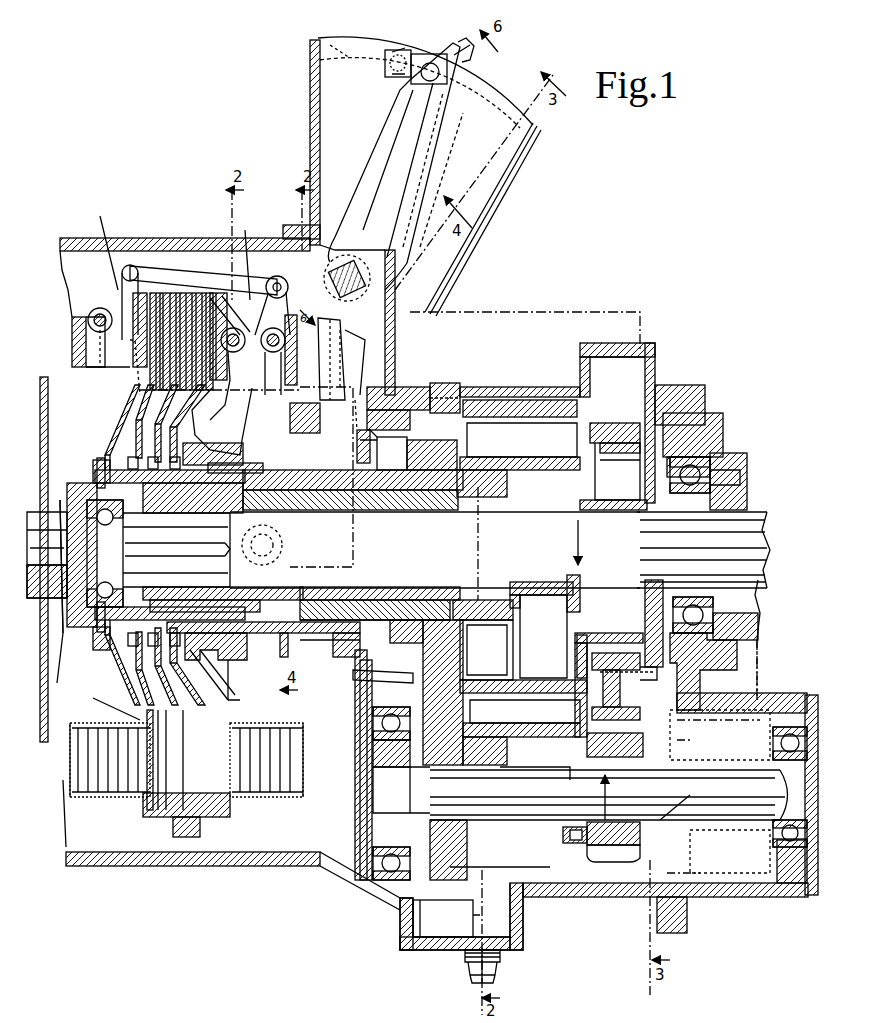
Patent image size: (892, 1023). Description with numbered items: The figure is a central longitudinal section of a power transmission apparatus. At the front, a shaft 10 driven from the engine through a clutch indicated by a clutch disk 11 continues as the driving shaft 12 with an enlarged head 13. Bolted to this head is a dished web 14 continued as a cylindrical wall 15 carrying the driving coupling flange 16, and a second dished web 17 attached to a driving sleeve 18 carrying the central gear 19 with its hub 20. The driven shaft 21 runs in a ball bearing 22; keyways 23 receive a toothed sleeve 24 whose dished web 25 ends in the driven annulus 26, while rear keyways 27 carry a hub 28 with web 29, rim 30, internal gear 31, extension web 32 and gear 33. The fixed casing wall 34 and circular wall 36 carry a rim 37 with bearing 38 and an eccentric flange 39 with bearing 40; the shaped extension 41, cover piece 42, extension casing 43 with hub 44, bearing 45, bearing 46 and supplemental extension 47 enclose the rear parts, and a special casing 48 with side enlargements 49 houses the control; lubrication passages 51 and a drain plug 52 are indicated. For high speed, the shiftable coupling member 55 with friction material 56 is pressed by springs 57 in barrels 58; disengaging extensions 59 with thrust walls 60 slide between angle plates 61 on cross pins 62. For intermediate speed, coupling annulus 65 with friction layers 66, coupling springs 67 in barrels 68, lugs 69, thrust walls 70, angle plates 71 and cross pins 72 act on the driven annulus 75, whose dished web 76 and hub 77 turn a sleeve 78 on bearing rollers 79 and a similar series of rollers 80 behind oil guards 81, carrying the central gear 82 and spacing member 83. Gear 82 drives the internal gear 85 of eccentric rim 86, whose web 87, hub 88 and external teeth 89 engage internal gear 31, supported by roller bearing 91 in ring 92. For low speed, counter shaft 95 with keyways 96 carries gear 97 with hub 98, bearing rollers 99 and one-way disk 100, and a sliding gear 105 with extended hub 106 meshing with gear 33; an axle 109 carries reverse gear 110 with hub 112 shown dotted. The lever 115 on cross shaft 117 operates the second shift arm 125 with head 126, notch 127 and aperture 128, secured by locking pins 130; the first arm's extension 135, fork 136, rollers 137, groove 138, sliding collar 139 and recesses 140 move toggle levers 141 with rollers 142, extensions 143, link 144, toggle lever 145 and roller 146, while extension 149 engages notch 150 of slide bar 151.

The shaft 10 is at (60, 500).
The clutch disk 11 is at (48, 420).
The driving shaft 12 is at (66, 625).
The enlarged head 13 is at (85, 630).
The dished web 14 is at (173, 460).
The cylindrical wall 15 is at (160, 815).
The flange 16 is at (185, 295).
The second dished web 17 is at (230, 700).
The driving sleeve 18 is at (350, 657).
The central gear 19 is at (415, 600).
The hub 20 is at (388, 510).
The driven shaft 21 is at (435, 550).
The ball bearing 22 is at (105, 553).
The keyways 23 is at (176, 550).
The toothed sleeve 24 is at (185, 520).
The dished web 25 is at (140, 410).
The annulus 26 is at (160, 290).
The keyways 27 is at (740, 556).
The hub 28 is at (712, 498).
The web 29 is at (645, 597).
The rim 30 is at (628, 453).
The internal gear 31 is at (603, 450).
The extension web 32 is at (622, 694).
The gear 33 is at (600, 360).
The casing wall 34 is at (200, 867).
The circular wall 36 is at (357, 448).
The rim 37 is at (360, 430).
The bearing 38 is at (417, 453).
The flange 39 is at (360, 690).
The bearing 40 is at (373, 727).
The shaped extension 41 is at (523, 915).
The cover piece 42 is at (400, 387).
The extension casing 43 is at (738, 897).
The hub 44 is at (700, 420).
The bearing 45 is at (712, 470).
The bearing 46 is at (790, 883).
The supplemental extension 47 is at (760, 628).
The special casing 48 is at (312, 66).
The side enlargements 49 is at (312, 50).
The lubrication passages 51 is at (355, 676).
The drain plug 52 is at (500, 965).
The shiftable coupling member 55 is at (140, 295).
The friction material 56 is at (132, 884).
The springs 57 is at (120, 795).
The cylindrical barrel 58 is at (90, 797).
The disengaging extensions 59 is at (90, 365).
The thrust wall 60 is at (72, 322).
The angle plates 61 is at (128, 370).
The cross pin 62 is at (100, 366).
The coupling annulus 65 is at (220, 293).
The friction layers 66 is at (197, 293).
The spring 67 is at (262, 797).
The barrels 68 is at (303, 797).
The hollow lugs 69 is at (276, 355).
The thrust wall 70 is at (280, 305).
The angle plates 71 is at (228, 300).
The cross pins 72 is at (236, 352).
The driven annulus 75 is at (188, 295).
The dished web 76 is at (118, 545).
The hub 77 is at (210, 640).
The sleeve 78 is at (448, 600).
The bearing rollers 79 is at (310, 492).
The sleeve 80 is at (335, 510).
The oil guard 81 is at (236, 513).
The central gear 82 is at (480, 498).
The spacing member 83 is at (545, 595).
The internal gear 85 is at (488, 675).
The rim 86 is at (540, 680).
The web 87 is at (575, 640).
The hub 88 is at (598, 633).
The external teeth 89 is at (608, 512).
The roller bearing 91 is at (520, 580).
The ring 92 is at (520, 400).
The counter shaft 95 is at (609, 795).
The keyways 96 is at (508, 820).
The gear 97 is at (473, 912).
The hub 98 is at (410, 760).
The bearing rollers 99 is at (384, 775).
The disk 100 is at (500, 867).
The sliding gear 105 is at (595, 858).
The extended hub 106 is at (563, 835).
The axle 109 is at (712, 683).
The gear 110 is at (765, 668).
The hub 112 is at (665, 812).
The lever 115 is at (478, 50).
The cross shaft 117 is at (362, 280).
The second shift arm 125 is at (398, 110).
The arc-shaped head 126 is at (385, 63).
The notch 127 is at (423, 54).
The aperture 128 is at (437, 63).
The locking pins 130 is at (396, 50).
The extension 135 is at (345, 335).
The fork 136 is at (300, 425).
The rollers 137 is at (284, 552).
The groove 138 is at (258, 643).
The sliding collar 139 is at (312, 645).
The recesses 140 is at (228, 668).
The levers 141 is at (235, 414).
The roller 142 is at (262, 380).
The outward extension 143 is at (298, 225).
The link 144 is at (260, 282).
The toggle lever 145 is at (122, 268).
The roller 146 is at (99, 308).
The extension 149 is at (355, 352).
The notch 150 is at (360, 400).
The bar 151 is at (445, 390).